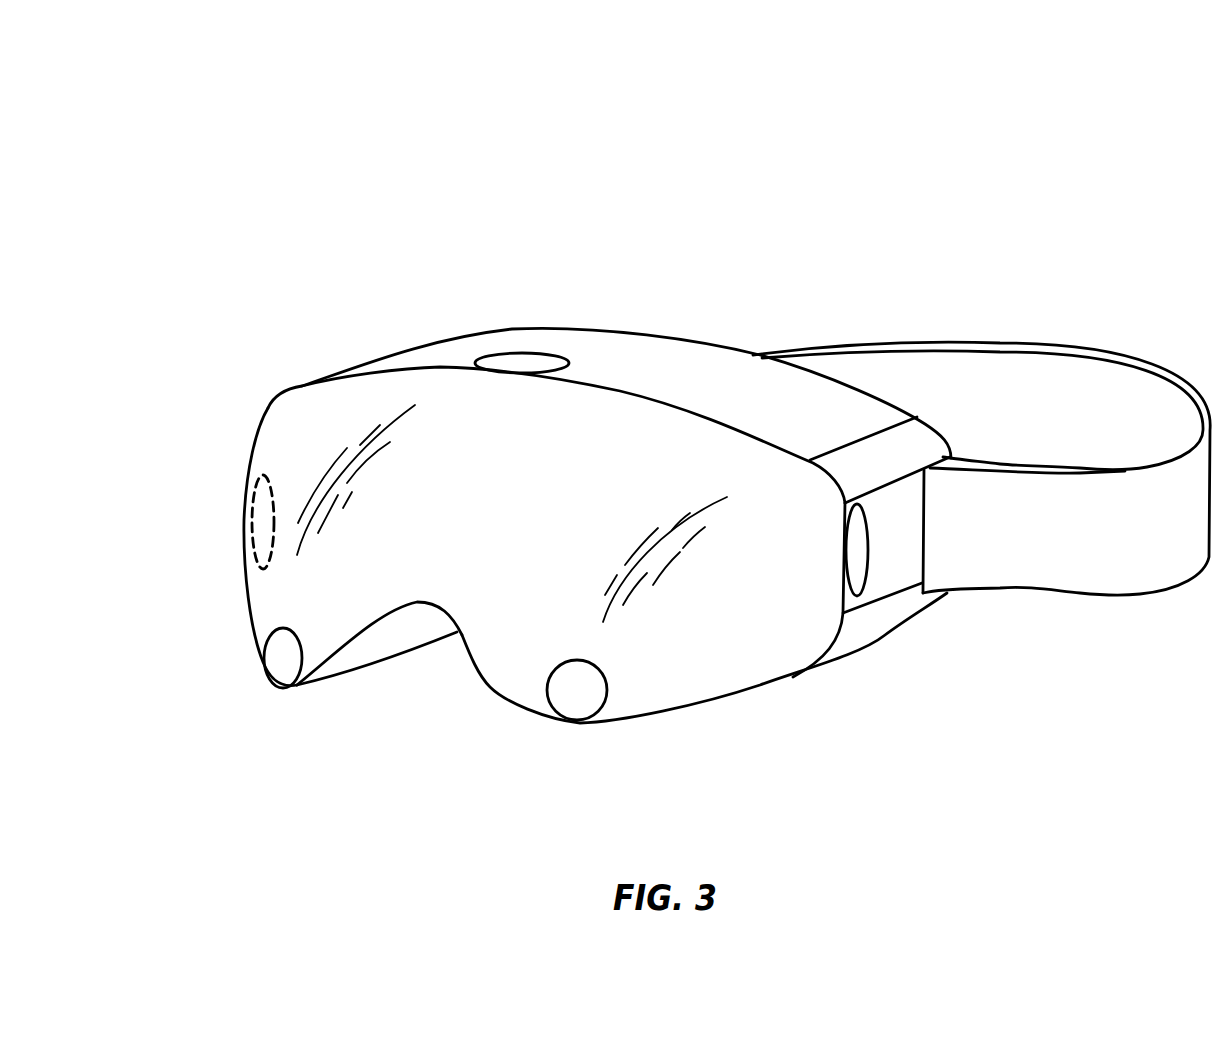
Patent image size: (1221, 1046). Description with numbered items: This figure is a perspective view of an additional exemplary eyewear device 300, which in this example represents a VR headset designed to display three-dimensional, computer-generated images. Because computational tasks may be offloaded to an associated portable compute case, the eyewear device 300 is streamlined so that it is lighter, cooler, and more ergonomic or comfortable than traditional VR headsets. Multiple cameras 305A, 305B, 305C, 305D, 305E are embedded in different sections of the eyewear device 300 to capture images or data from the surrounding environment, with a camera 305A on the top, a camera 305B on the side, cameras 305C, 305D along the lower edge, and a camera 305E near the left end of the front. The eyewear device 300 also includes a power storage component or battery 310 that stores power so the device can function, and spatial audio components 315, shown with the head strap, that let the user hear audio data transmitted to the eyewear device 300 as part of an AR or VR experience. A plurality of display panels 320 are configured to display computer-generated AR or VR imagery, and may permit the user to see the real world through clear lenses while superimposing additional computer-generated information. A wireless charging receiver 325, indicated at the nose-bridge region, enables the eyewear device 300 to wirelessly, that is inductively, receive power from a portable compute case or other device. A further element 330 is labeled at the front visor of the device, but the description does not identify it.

The eyewear device 300 is at (306, 83).
The camera 305A is at (537, 363).
The camera 305B is at (857, 596).
The camera 305C is at (577, 707).
The camera 305D is at (277, 661).
The camera 305E is at (262, 519).
The battery 310 is at (719, 375).
The spatial audio components 315 is at (942, 599).
The display panels 320 is at (728, 682).
The wireless charging receiver 325 is at (428, 607).
The visor / display cover 330 is at (283, 467).